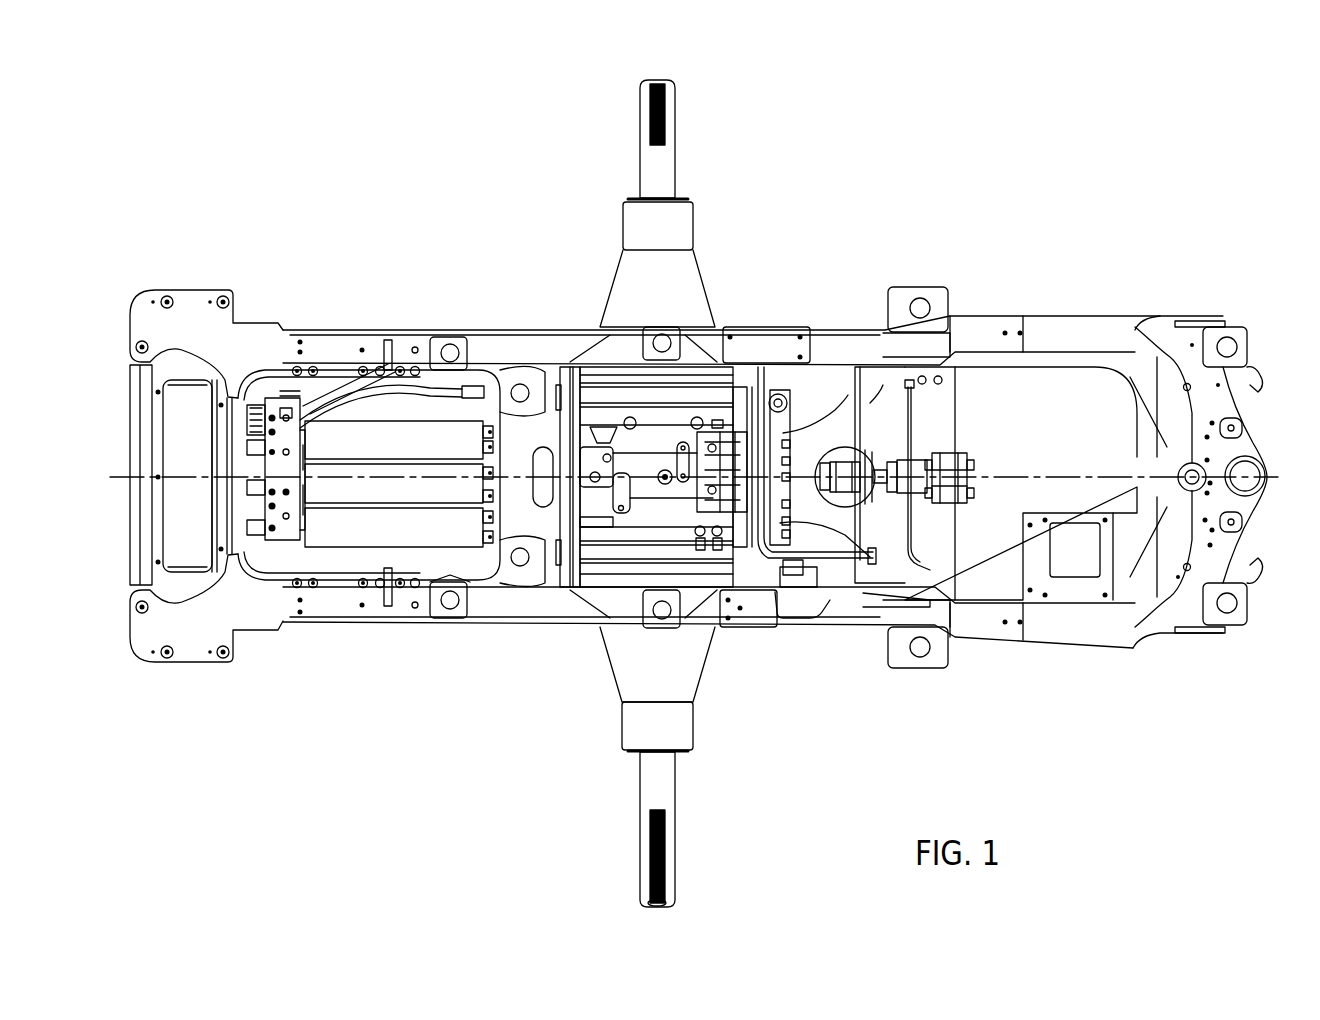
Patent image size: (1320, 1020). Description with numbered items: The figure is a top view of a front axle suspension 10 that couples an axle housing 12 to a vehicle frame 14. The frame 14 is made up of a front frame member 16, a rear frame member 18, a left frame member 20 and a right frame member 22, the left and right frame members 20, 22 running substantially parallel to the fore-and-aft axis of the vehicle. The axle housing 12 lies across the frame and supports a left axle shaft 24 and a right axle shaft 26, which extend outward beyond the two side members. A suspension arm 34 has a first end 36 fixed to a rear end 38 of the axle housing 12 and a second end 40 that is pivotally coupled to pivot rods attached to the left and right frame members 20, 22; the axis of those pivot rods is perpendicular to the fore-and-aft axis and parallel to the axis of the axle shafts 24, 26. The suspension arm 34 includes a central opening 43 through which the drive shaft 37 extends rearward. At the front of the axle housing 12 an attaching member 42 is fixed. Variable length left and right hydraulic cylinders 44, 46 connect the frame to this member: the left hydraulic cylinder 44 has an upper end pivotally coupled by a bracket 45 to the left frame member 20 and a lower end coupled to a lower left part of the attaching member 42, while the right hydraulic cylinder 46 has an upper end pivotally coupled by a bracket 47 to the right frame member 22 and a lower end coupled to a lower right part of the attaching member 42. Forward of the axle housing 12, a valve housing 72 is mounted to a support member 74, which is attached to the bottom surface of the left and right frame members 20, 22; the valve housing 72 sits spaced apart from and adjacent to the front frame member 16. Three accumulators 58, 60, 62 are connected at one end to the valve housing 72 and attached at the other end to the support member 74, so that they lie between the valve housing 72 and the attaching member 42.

The axle suspension 10 is at (694, 488).
The axle housing 12 is at (698, 414).
The vehicle frame 14 is at (378, 318).
The front frame member 16 is at (182, 632).
The rear frame member 18 is at (1183, 593).
The left frame member 20 is at (492, 607).
The right frame member 22 is at (527, 333).
The left axle shaft 24 is at (672, 832).
The right axle shaft 26 is at (645, 147).
The suspension arm 34 is at (835, 408).
The first end 36 is at (803, 395).
The drive shaft 37 is at (910, 477).
The rear end 38 is at (750, 520).
The second end 40 is at (878, 440).
The attaching member 42 is at (572, 390).
The central opening 43 is at (852, 560).
The left hydraulic cylinder 44 is at (548, 567).
The bracket 45 is at (526, 476).
The right hydraulic cylinder 46 is at (537, 377).
The bracket 47 is at (483, 387).
The accumulator 58 is at (369, 477).
The accumulator 60 is at (343, 530).
The accumulator 62 is at (380, 483).
The valve housing 72 is at (285, 527).
The support member 74 is at (448, 613).